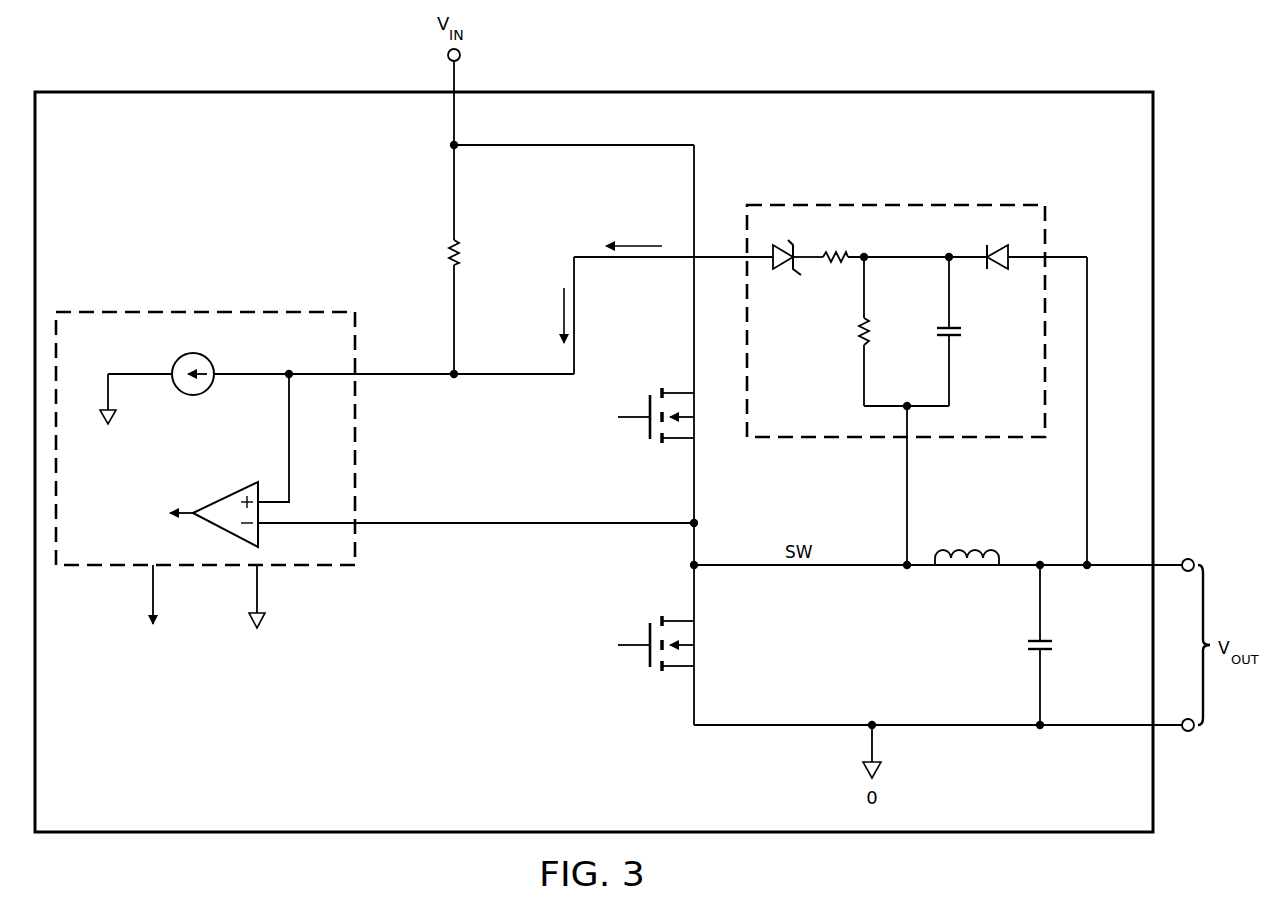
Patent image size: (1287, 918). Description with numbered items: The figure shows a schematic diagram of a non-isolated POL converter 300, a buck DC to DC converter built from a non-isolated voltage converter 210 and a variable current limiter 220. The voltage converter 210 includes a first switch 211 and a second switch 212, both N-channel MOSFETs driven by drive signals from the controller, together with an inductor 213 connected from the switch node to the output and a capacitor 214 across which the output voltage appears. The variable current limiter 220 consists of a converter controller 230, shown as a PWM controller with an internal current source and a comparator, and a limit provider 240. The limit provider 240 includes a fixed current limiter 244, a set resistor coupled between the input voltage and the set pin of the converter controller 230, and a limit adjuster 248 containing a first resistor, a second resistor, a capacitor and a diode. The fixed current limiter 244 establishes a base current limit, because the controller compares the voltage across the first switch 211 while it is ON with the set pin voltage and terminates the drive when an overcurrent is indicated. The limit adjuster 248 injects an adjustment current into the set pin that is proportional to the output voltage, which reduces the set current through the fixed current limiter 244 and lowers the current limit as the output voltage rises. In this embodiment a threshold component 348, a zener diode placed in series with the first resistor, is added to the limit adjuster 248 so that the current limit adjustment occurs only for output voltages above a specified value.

The non-isolated POL converter 300 is at (163, 66).
The variable current limiter 220 is at (230, 238).
The converter controller 230 is at (136, 306).
The fixed current limiter 244 is at (447, 254).
The limit provider 240 is at (790, 161).
The limit adjuster 248 is at (964, 203).
The threshold component 348 is at (773, 270).
The non-isolated voltage converter 210 is at (680, 754).
The first switch 211 is at (650, 436).
The second switch 212 is at (650, 664).
The inductor 213 is at (967, 570).
The capacitor 214 is at (1055, 645).